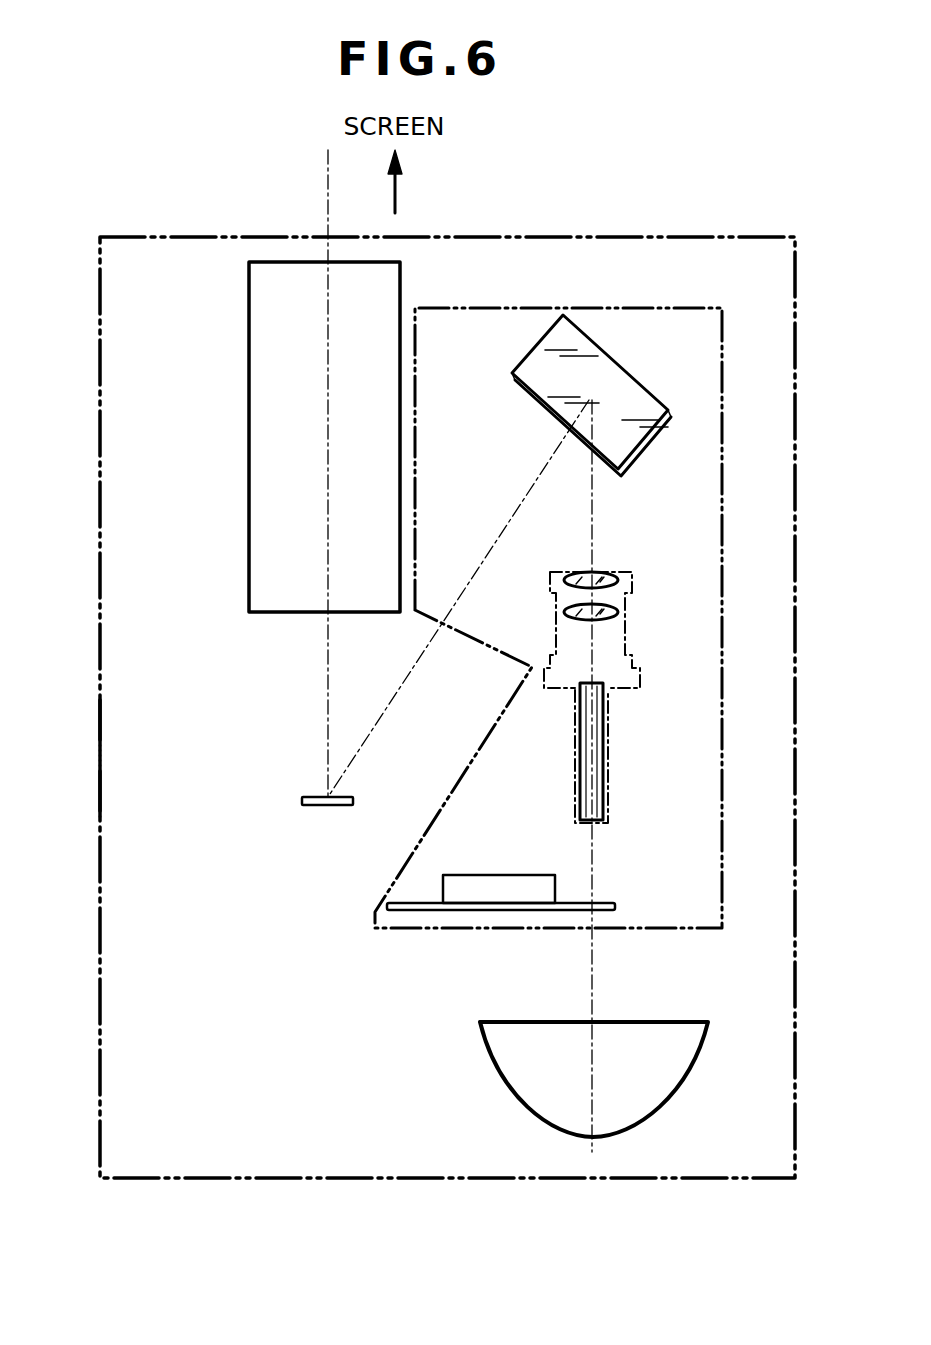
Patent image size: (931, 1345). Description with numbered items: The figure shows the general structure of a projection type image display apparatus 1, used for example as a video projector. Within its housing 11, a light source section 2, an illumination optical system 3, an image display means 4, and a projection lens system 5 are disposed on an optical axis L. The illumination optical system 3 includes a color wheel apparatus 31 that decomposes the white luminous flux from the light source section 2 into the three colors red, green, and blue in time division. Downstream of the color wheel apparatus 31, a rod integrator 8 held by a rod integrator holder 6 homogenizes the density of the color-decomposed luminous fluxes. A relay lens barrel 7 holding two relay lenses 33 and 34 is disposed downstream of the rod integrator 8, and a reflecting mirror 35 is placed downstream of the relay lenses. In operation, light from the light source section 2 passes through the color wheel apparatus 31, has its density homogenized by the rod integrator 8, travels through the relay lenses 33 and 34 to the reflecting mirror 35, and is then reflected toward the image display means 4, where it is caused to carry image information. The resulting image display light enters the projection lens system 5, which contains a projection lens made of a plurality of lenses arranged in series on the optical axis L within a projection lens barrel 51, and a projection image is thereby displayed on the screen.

The projection type image display apparatus 1 is at (82, 306).
The housing 11 is at (100, 770).
The light source section 2 is at (486, 1050).
The illumination optical system 3 is at (736, 378).
The color wheel apparatus 31 is at (470, 874).
The relay lens 33 is at (605, 617).
The relay lens 34 is at (614, 573).
The reflecting mirror 35 is at (642, 398).
The image display means 4 is at (355, 800).
The projection lens system 5 is at (292, 437).
The projection lens barrel 51 is at (249, 486).
The rod integrator holder 6 is at (608, 781).
The relay lens barrel 7 is at (615, 610).
The rod integrator 8 is at (604, 737).
The optical axis L is at (328, 207).